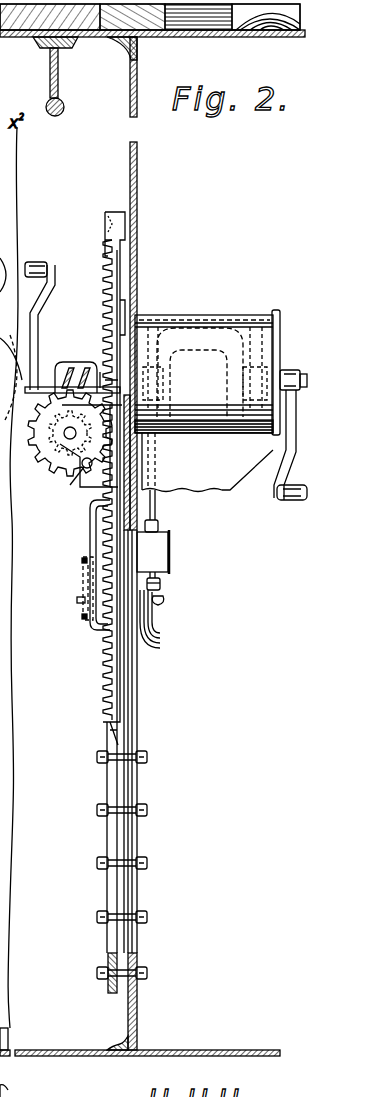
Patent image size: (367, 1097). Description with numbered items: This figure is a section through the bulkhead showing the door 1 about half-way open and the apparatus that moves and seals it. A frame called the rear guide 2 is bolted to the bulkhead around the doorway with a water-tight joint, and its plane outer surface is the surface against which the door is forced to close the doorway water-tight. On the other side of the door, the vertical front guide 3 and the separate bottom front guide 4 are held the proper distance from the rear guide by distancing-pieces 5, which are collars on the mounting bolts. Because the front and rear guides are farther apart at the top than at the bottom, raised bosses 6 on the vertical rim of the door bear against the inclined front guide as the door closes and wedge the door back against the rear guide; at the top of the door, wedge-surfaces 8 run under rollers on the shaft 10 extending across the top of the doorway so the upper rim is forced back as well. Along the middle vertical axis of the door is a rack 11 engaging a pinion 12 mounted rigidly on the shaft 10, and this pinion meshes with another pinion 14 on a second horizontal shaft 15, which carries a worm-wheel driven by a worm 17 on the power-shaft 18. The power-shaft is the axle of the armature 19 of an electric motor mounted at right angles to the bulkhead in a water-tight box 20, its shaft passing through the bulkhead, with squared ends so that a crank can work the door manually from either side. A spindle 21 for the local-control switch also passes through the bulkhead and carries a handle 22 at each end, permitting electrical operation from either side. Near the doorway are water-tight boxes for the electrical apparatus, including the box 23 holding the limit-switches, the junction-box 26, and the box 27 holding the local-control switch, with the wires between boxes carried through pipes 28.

The door 1 is at (120, 290).
The rear guide 2 is at (158, 520).
The vertical front guide 3 is at (106, 888).
The bottom front guide 4 is at (106, 988).
The distancing-piece 5 is at (127, 808).
The raised boss 6 is at (104, 262).
The wedge-surface 8 is at (108, 236).
The shaft 10 is at (85, 475).
The rack 11 is at (104, 310).
The pinion 12 is at (66, 479).
The pinion 14 is at (70, 433).
The shaft 15 is at (45, 430).
The worm 17 is at (72, 369).
The power-shaft 18 is at (98, 367).
The armature 19 is at (219, 362).
The water-tight box 20 is at (206, 316).
The spindle 21 is at (162, 585).
The handle 22 is at (82, 602).
The box 23 is at (37, 381).
The junction-box 26 is at (170, 552).
The box 27 is at (92, 556).
The pipe 28 is at (160, 641).